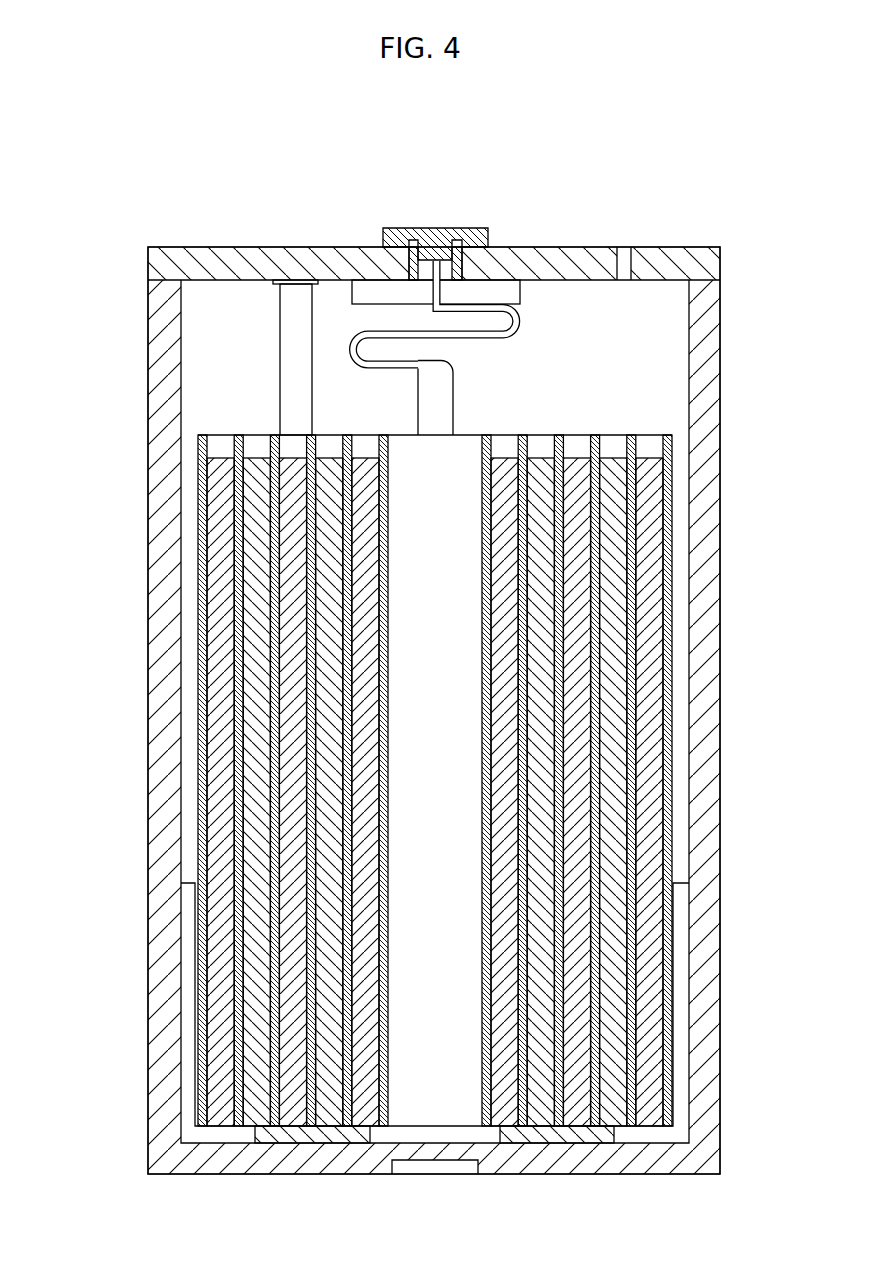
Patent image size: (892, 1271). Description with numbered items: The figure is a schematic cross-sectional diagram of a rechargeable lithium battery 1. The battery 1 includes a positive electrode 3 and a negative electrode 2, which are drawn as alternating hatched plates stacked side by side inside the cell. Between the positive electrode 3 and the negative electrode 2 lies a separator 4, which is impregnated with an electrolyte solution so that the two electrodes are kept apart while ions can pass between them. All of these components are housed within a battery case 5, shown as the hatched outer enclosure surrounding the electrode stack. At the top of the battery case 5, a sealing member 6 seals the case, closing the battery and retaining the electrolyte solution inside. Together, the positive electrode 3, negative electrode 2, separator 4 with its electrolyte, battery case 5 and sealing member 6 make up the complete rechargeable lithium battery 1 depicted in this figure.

The rechargeable lithium battery 1 is at (623, 200).
The negative electrode 2 is at (653, 952).
The positive electrode 3 is at (260, 950).
The separator 4 is at (235, 1083).
The battery case 5 is at (168, 345).
The sealing member 6 is at (388, 231).